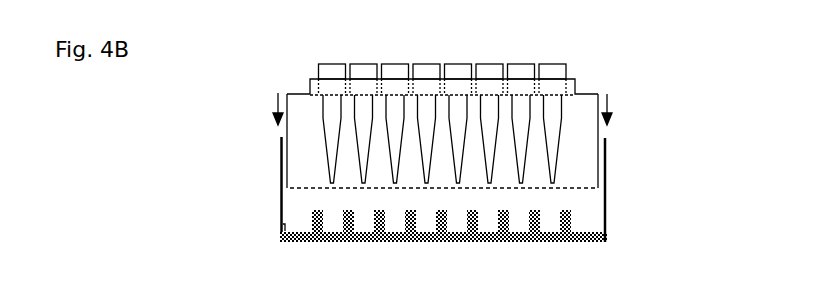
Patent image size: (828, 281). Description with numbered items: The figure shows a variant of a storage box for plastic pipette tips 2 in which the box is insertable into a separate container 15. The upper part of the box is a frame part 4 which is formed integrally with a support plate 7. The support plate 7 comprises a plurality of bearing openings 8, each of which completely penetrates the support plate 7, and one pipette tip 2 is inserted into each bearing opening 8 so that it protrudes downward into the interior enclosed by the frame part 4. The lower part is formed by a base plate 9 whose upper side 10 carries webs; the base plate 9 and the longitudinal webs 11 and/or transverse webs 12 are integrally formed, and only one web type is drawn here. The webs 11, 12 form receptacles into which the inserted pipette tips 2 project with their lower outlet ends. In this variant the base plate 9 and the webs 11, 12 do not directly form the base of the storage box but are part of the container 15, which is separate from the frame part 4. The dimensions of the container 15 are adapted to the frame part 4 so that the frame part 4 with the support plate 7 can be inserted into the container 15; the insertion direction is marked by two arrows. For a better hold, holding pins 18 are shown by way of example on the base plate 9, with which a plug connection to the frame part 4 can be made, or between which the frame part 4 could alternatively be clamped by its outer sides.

The plastic pipette tip 2 is at (530, 64).
The frame part 4 is at (599, 137).
The support plate 7 is at (303, 93).
The bearing opening 8 is at (430, 74).
The base plate 9 is at (280, 233).
The upper side of the base plate 10 is at (593, 224).
The longitudinal web 11 is at (537, 212).
The transverse web 12 is at (567, 212).
The container 15 is at (606, 165).
The holding pin 18 is at (284, 227).